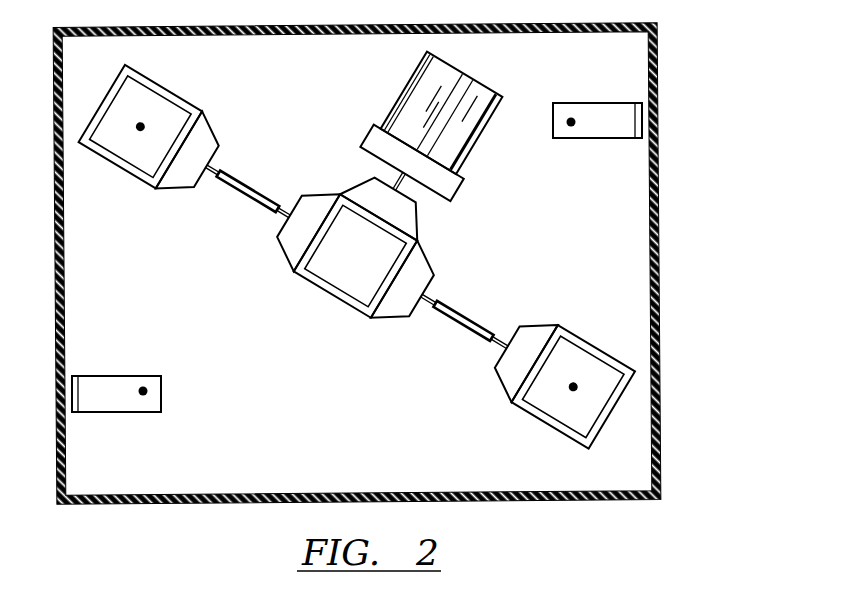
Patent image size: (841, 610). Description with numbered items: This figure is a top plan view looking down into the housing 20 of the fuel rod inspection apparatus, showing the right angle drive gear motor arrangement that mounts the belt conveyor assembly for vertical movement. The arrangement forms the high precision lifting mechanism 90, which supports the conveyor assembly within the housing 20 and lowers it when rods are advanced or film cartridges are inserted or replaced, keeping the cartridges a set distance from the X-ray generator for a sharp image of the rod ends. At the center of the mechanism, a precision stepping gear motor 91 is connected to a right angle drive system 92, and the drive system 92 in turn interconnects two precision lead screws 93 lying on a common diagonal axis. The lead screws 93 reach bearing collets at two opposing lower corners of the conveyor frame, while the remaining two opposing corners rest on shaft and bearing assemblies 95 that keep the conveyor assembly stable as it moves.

The housing 20 is at (668, 148).
The lifting mechanism 90 is at (386, 396).
The precision stepping gear motor 91 is at (468, 160).
The right angle drive system 92 is at (500, 378).
The precision lead screws 93 is at (140, 122).
The shaft and bearing assemblies 95 is at (571, 126).